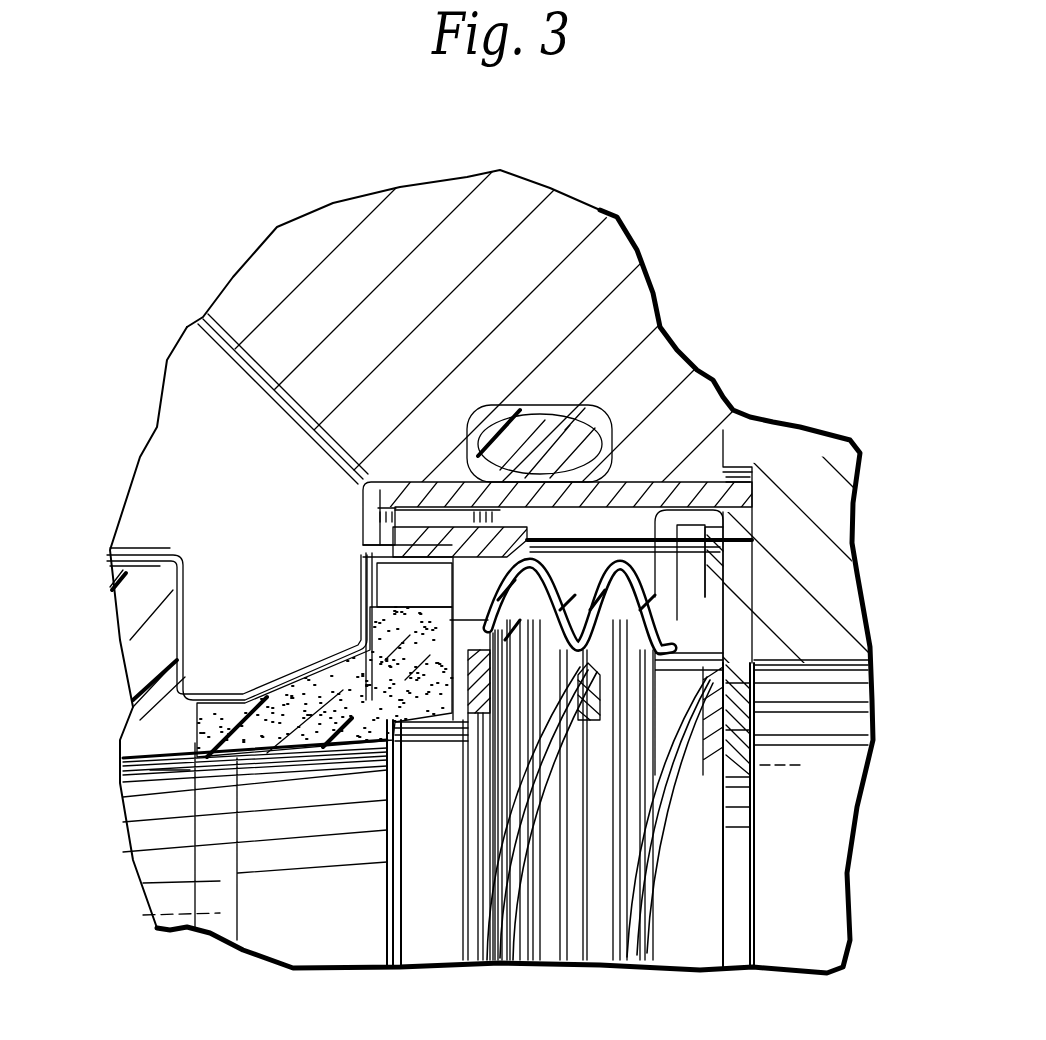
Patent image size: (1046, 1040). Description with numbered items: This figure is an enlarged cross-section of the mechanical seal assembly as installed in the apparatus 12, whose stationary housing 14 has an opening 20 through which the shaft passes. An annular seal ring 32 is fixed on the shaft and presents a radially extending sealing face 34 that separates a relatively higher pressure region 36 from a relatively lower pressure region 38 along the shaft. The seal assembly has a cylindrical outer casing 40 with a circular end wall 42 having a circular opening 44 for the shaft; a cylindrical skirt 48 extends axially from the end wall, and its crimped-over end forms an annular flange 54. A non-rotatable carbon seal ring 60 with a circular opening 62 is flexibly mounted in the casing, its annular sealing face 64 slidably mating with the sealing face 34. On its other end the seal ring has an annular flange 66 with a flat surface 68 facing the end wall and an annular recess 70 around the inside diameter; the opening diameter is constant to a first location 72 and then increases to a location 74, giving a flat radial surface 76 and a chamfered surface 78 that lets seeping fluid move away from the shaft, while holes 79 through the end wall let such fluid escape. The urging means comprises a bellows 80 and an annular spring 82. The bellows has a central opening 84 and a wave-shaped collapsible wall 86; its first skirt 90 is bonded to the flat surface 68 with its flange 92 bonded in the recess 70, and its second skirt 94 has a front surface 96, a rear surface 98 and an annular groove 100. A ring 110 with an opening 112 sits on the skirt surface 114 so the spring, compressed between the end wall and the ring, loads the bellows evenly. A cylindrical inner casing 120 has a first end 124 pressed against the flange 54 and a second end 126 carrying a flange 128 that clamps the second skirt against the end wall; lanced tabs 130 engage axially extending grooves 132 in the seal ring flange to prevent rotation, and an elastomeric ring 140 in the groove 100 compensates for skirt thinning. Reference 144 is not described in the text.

The apparatus 12 is at (207, 287).
The stationary housing 14 is at (765, 449).
The opening 20 is at (810, 775).
The annular seal ring 32 is at (160, 590).
The annular sealing face 34 is at (197, 717).
The relatively higher pressure region 36 is at (216, 485).
The relatively lower pressure region 38 is at (267, 817).
The cylindrical outer casing 40 is at (756, 563).
The circular end wall 42 is at (737, 613).
The circular opening 44 is at (753, 887).
The cylindrical skirt 48 is at (413, 508).
The annular flange 54 is at (357, 500).
The non-rotatable seal ring 60 is at (275, 710).
The circular opening 62 is at (267, 893).
The annular sealing face 64 is at (195, 743).
The annular flange 66 is at (375, 620).
The flat surface 68 is at (450, 585).
The annular recess 70 is at (380, 728).
The first axial location 72 is at (387, 833).
The second location 74 is at (353, 873).
The flat radial surface 76 is at (200, 770).
The chamfered surface 78 is at (295, 760).
The holes 79 is at (740, 717).
The bellows 80 is at (565, 586).
The annular spring 82 is at (653, 935).
The opening 84 is at (427, 918).
The annular collapsible wall 86 is at (625, 545).
The first skirt 90 is at (457, 668).
The flange 92 is at (483, 770).
The second skirt 94 is at (735, 505).
The annular front surface 96 is at (713, 677).
The annular rear surface 98 is at (732, 632).
The annular groove 100 is at (715, 590).
The ring 110 is at (478, 846).
The opening 112 is at (483, 920).
The surface 114 is at (514, 622).
The cylindrical inner casing 120 is at (435, 520).
The first end 124 is at (383, 488).
The second end 126 is at (745, 477).
The flange 128 is at (655, 527).
The lanced tabs 130 is at (485, 542).
The axially extending grooves 132 is at (378, 572).
The elastomeric ring 140 is at (530, 420).
The collar 144 is at (485, 735).